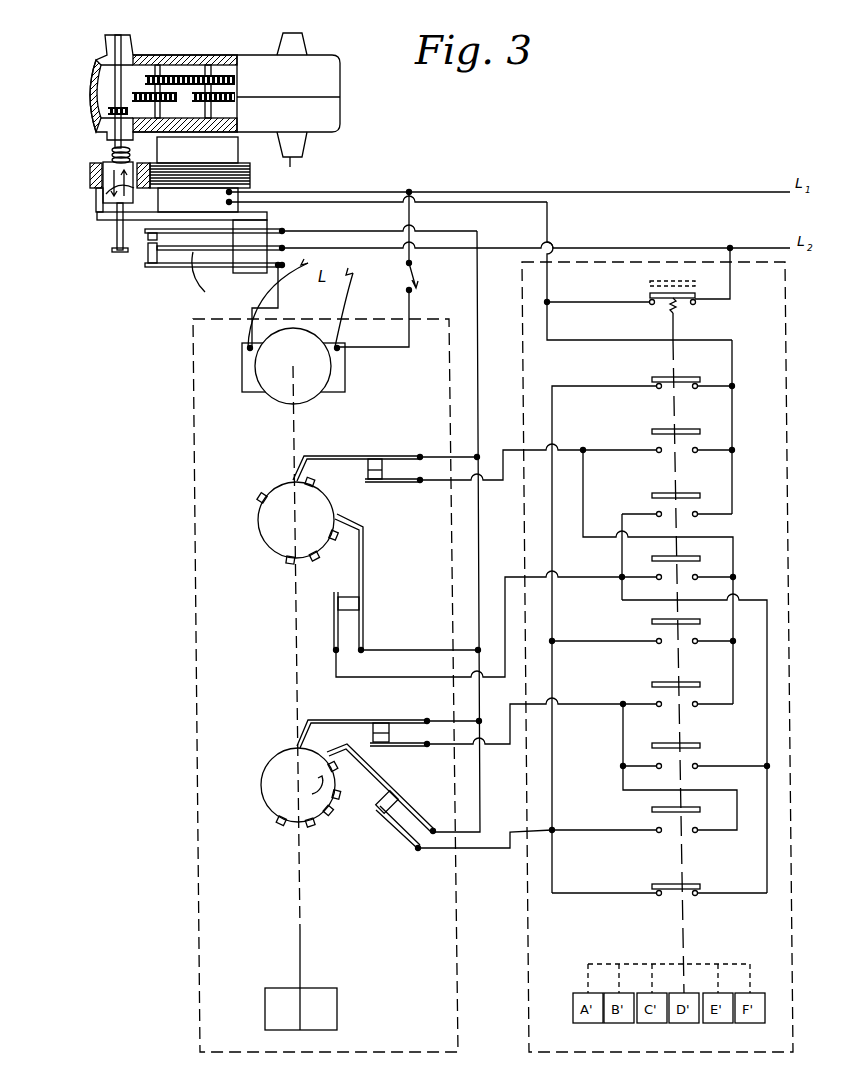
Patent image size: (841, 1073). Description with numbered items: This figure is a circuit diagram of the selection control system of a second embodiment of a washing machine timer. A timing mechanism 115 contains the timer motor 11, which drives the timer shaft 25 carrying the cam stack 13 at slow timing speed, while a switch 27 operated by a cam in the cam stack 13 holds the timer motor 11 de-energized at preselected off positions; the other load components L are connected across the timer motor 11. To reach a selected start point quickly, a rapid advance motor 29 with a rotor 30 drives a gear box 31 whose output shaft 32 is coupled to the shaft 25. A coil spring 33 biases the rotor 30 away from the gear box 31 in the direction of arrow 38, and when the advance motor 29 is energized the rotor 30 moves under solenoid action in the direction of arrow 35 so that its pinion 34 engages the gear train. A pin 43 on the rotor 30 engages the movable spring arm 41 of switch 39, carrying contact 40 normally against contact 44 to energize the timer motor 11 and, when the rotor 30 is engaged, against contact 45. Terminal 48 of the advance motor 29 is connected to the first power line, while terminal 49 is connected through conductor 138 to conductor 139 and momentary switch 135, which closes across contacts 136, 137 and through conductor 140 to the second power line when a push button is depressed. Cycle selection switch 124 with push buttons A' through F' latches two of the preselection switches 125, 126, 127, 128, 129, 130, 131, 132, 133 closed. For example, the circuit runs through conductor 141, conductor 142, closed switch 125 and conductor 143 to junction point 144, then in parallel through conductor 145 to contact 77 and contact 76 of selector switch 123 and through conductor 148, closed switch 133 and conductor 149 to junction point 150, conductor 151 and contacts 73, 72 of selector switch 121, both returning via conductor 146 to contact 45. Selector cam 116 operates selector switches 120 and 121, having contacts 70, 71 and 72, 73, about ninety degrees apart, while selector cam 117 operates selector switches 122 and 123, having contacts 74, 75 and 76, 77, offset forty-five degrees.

The timer motor 11 is at (242, 380).
The cam stack 13 is at (337, 1010).
The timer shaft 25 is at (290, 432).
The switch 27 is at (420, 280).
The rapid advance motor 29 is at (238, 144).
The rotor 30 is at (90, 168).
The gear box 31 is at (270, 56).
The output shaft 32 is at (305, 160).
The coil spring 33 is at (110, 150).
The pinion 34 is at (88, 104).
The arrow 35 is at (112, 194).
The arrow 38 is at (96, 197).
The switch 39 is at (177, 288).
The contact 40 is at (150, 253).
The movable spring arm 41 is at (205, 281).
The pin 43 is at (117, 224).
The contact 44 is at (153, 263).
The contact 45 is at (147, 238).
The terminal 48 is at (234, 192).
The terminal 49 is at (238, 203).
The contact 70 is at (368, 456).
The contact 71 is at (374, 483).
The contact 72 is at (362, 604).
The contact 73 is at (338, 604).
The contact 74 is at (382, 719).
The contact 75 is at (380, 747).
The contact 76 is at (398, 806).
The contact 77 is at (388, 815).
The timing mechanism 115 is at (198, 843).
The selector cam 116 is at (268, 546).
The selector cam 117 is at (263, 805).
The selector switch 120 is at (371, 459).
The selector switch 121 is at (365, 583).
The selector switch 122 is at (363, 731).
The selector switch 123 is at (387, 819).
The cycle selection switch 124 is at (529, 966).
The preselection switch 125 is at (655, 378).
The preselection switch 126 is at (665, 430).
The preselection switch 127 is at (665, 494).
The preselection switch 128 is at (666, 558).
The preselection switch 129 is at (662, 621).
The preselection switch 130 is at (668, 683).
The preselection switch 131 is at (668, 744).
The preselection switch 132 is at (660, 810).
The preselection switch 133 is at (670, 886).
The momentary switch 135 is at (652, 292).
The contact 136 is at (650, 304).
The contact 137 is at (697, 304).
The conductor 138 is at (547, 302).
The conductor 139 is at (610, 301).
The conductor 140 is at (732, 290).
The conductor 141 is at (735, 375).
The conductor 142 is at (720, 378).
The conductor 143 is at (552, 412).
The junction point 144 is at (556, 828).
The conductor 145 is at (480, 850).
The conductor 146 is at (478, 538).
The conductor 148 is at (580, 892).
The conductor 149 is at (768, 838).
The junction point 150 is at (622, 588).
The conductor 151 is at (505, 626).